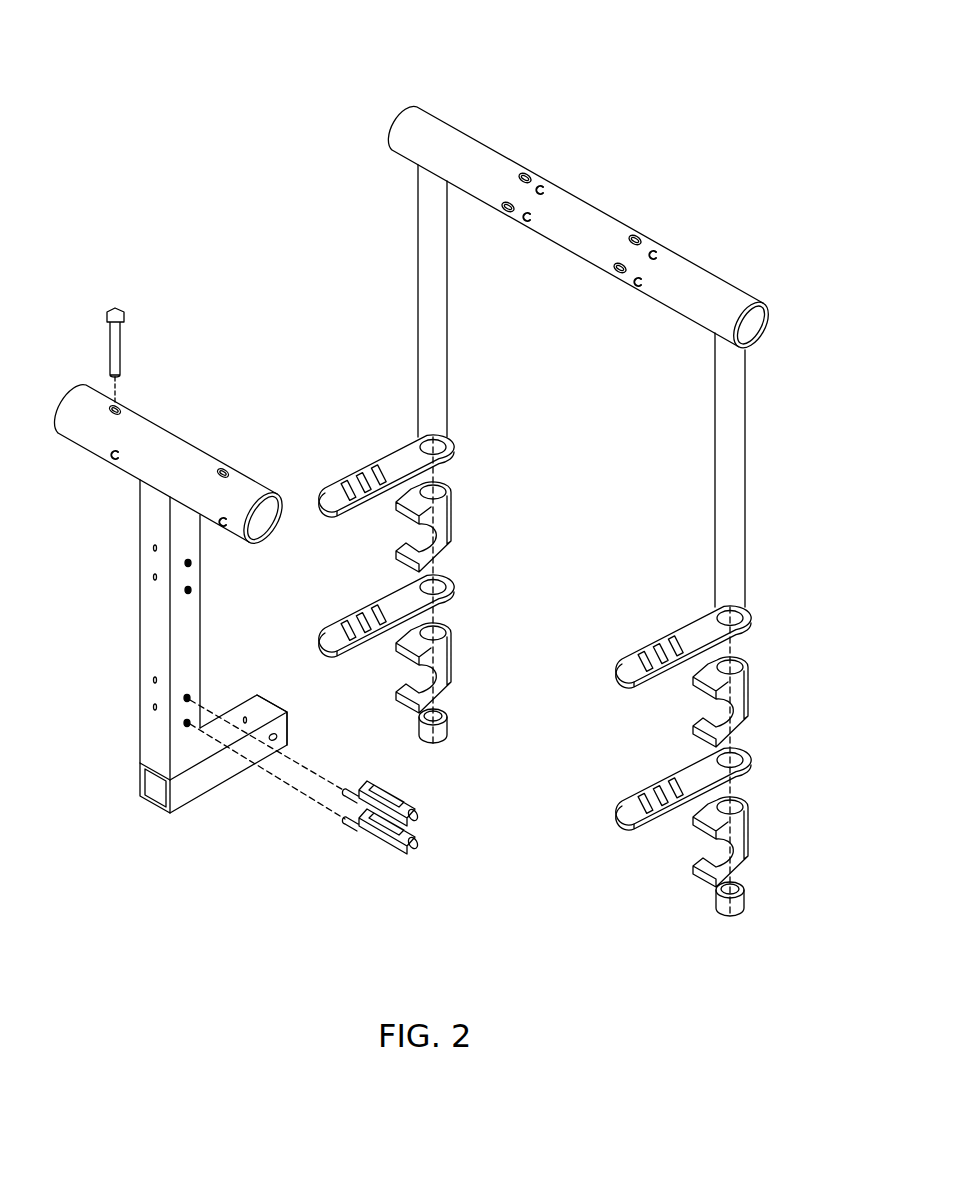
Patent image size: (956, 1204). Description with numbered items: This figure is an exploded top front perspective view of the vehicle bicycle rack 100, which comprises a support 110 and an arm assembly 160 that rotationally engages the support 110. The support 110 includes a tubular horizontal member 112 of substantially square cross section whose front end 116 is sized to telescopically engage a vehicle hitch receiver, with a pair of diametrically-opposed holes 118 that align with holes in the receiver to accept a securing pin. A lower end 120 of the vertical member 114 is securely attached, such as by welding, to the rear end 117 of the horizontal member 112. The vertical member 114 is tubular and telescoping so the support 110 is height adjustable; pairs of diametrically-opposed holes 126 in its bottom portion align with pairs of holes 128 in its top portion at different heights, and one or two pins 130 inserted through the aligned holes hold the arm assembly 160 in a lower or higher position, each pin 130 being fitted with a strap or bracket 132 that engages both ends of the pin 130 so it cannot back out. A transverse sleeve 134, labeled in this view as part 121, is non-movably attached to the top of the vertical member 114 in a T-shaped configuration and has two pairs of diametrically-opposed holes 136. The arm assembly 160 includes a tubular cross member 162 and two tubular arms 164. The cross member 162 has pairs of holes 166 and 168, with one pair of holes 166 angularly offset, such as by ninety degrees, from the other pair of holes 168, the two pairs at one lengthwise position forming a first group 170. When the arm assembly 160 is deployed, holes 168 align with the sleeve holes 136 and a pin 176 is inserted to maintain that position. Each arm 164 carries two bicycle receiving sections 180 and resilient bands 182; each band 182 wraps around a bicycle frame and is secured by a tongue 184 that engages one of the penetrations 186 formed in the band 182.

The vehicle bicycle rack 100 is at (170, 76).
The support 110 is at (95, 565).
The horizontal member 112 is at (220, 770).
The vertical member 114 is at (123, 610).
The front end 116 is at (288, 722).
The rear end 117 is at (133, 782).
The diametrically-opposed holes 118 is at (276, 738).
The lower end 120 is at (135, 751).
The lower crossbar 121 is at (176, 418).
The diametrically-opposed holes 126 is at (186, 697).
The diametrically-opposed holes 128 is at (190, 564).
The pin 130 is at (370, 840).
The strap or bracket 132 is at (415, 838).
The transverse sleeve 134 is at (184, 462).
The diametrically-opposed holes 136 is at (118, 405).
The arm assembly 160 is at (612, 205).
The cross member 162 is at (719, 292).
The arms 164 is at (448, 365).
The diametrically-opposed holes 166 is at (531, 176).
The diametrically-opposed holes 168 is at (543, 189).
The first group 170 is at (625, 158).
The pin 176 is at (122, 342).
The bicycle receiving section 180 is at (400, 546).
The resilient band 182 is at (690, 626).
The tongue 184 is at (693, 757).
The penetrations 186 is at (624, 642).